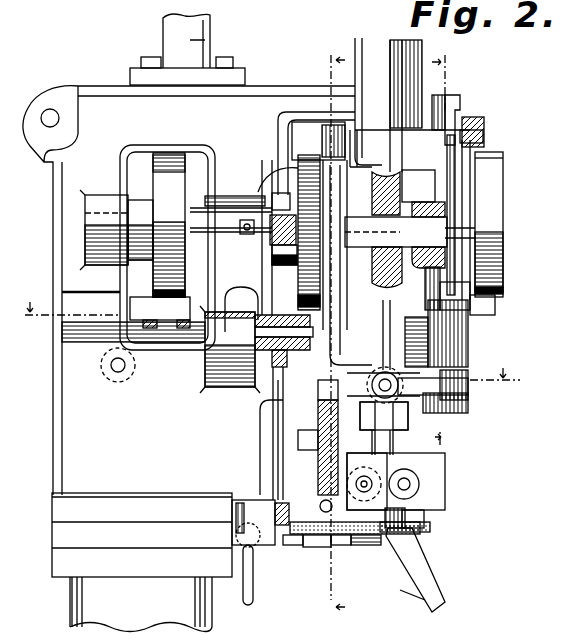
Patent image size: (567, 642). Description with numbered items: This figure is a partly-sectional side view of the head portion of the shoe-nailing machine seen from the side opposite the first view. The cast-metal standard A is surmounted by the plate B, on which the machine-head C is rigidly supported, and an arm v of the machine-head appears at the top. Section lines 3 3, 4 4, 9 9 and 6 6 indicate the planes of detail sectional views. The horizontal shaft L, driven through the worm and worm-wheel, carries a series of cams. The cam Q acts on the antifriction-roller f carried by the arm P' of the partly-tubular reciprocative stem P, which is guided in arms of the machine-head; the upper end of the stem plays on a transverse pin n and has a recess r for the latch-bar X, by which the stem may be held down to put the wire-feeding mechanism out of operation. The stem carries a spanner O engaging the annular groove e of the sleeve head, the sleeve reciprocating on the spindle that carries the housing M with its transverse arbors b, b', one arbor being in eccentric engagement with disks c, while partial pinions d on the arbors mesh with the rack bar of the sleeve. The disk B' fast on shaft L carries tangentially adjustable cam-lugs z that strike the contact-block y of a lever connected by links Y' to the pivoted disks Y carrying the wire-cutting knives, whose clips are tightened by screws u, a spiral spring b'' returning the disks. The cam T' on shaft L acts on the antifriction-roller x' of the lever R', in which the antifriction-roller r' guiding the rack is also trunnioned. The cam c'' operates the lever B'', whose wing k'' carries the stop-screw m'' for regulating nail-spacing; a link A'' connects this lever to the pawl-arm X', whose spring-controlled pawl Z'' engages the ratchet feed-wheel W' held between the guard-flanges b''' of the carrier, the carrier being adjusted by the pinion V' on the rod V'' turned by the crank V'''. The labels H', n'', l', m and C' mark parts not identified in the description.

The machine-head C is at (246, 266).
The arm of the machine-head v is at (186, 41).
The section line 9 9 is at (321, 334).
The section line 4 4 is at (442, 246).
The section line 3 3 is at (269, 349).
The contact-block y is at (297, 148).
The partial pinion d is at (318, 141).
The cam-lugs z is at (290, 166).
The wing k'' is at (272, 193).
The transverse pin n is at (439, 112).
The recess r is at (466, 114).
The latch-bar X is at (490, 130).
The bevel gear H' is at (403, 164).
The disk B' is at (309, 232).
The rod n'' is at (231, 212).
The stop-screw m'' is at (232, 230).
The cam c'' is at (279, 237).
The lever B'' is at (269, 383).
The shaft L is at (410, 217).
The cam Q is at (497, 238).
The cam T' is at (133, 247).
The lever R' is at (128, 374).
The antifriction-roller x' is at (215, 349).
The arm of the stem P' is at (447, 290).
The antifriction-roller f is at (492, 305).
The reciprocative stem P is at (452, 333).
The link Y' is at (360, 267).
The disks Y is at (317, 433).
The annular groove e is at (372, 387).
The spanner O is at (418, 402).
The slide l' is at (359, 416).
The antifriction-roller r' is at (408, 429).
The housing M is at (422, 463).
The transverse arbor b is at (367, 473).
The disks c is at (364, 477).
The transverse arbor b' is at (422, 484).
The clip-holding screw u is at (424, 512).
The spring m is at (411, 518).
The ratchet-wheel W' is at (413, 567).
The handle C' is at (397, 606).
The plate B is at (142, 535).
The standard A is at (141, 604).
The pinion V' is at (256, 533).
The rod V'' is at (244, 517).
The crank V''' is at (255, 590).
The spiral spring b'' is at (303, 512).
The section line 6 6 is at (355, 519).
The link A'' is at (295, 556).
The arm X' is at (317, 549).
The spring-controlled pawl Z'' is at (338, 561).
The guard-flanges b''' is at (365, 546).